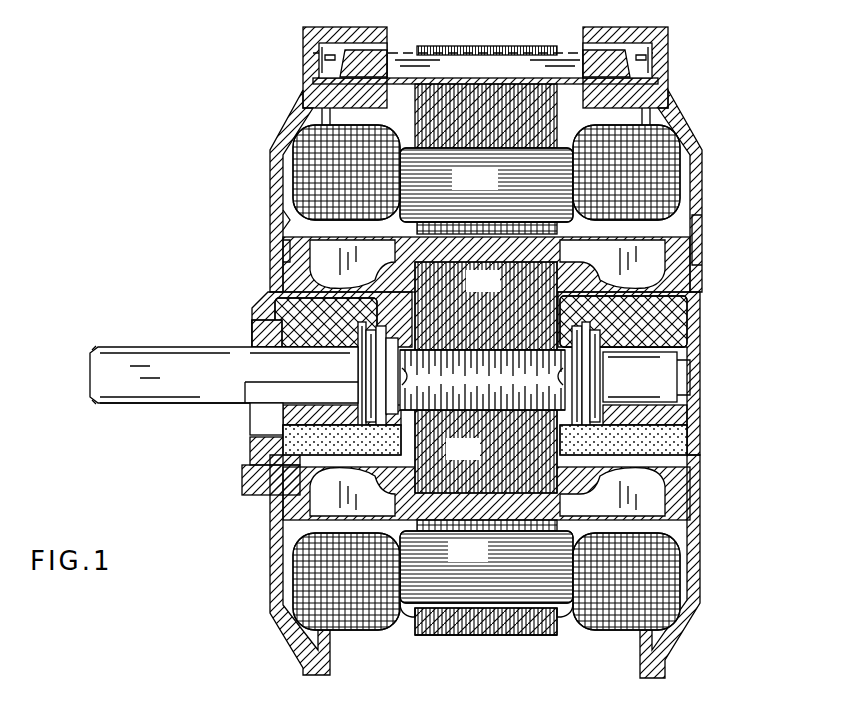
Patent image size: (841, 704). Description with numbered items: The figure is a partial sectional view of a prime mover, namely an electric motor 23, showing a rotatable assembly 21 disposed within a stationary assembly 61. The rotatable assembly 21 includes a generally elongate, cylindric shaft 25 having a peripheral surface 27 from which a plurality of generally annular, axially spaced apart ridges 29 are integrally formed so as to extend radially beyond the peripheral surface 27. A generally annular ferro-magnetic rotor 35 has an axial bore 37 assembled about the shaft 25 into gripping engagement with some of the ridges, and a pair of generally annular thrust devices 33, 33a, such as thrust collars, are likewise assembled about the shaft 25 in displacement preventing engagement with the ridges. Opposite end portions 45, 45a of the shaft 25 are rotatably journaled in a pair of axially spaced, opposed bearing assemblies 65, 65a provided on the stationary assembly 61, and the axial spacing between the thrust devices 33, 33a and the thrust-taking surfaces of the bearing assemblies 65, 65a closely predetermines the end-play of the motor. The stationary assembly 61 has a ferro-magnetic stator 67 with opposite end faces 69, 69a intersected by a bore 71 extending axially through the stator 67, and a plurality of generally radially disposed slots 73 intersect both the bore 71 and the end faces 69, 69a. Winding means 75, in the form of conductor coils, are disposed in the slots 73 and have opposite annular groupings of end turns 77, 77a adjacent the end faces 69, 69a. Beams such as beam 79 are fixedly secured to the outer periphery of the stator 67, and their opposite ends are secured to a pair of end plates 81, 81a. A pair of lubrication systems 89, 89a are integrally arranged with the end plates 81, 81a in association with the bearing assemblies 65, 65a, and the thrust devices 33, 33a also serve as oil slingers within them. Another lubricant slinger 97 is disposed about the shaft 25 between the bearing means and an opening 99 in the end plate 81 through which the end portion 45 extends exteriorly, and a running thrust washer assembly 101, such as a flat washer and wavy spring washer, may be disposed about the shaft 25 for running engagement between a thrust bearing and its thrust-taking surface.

The rotatable assembly 21 is at (702, 230).
The electric motor 23 is at (232, 115).
The shaft 25 is at (170, 384).
The peripheral surface 27 is at (182, 406).
The plurality of ridges 29 is at (480, 422).
The thrust device 33 is at (372, 378).
The thrust device 33a is at (603, 374).
The rotor 35 is at (469, 292).
The axial bore 37 is at (494, 350).
The end portion 45 is at (88, 378).
The end portion 45a is at (690, 372).
The stationary assembly 61 is at (266, 548).
The bearing assembly 65 is at (272, 455).
The bearing assembly 65a is at (686, 412).
The stator 67 is at (452, 640).
The end face 69 is at (415, 627).
The end face 69a is at (558, 627).
The bore 71 is at (492, 531).
The slots 73 is at (523, 635).
The winding means 75 is at (462, 189).
The end turns 77 is at (296, 165).
The end turns 77a is at (676, 178).
The beam 79 is at (512, 64).
The end plate 81 is at (300, 92).
The end plate 81a is at (668, 97).
The lubrication system 89 is at (288, 310).
The lubrication system 89a is at (690, 310).
The lubricant slinger 97 is at (262, 347).
The opening 99 is at (252, 416).
The running thrust washer assembly 101 is at (345, 386).